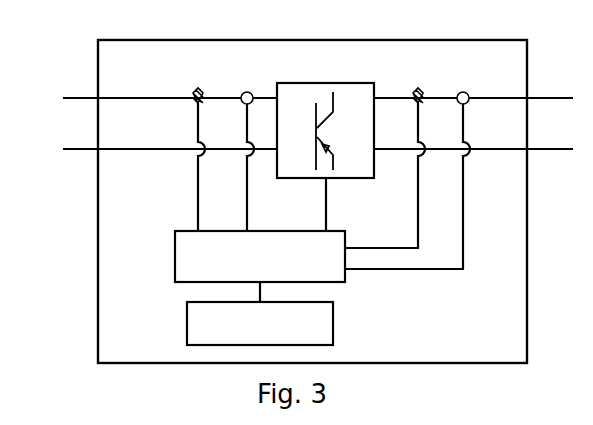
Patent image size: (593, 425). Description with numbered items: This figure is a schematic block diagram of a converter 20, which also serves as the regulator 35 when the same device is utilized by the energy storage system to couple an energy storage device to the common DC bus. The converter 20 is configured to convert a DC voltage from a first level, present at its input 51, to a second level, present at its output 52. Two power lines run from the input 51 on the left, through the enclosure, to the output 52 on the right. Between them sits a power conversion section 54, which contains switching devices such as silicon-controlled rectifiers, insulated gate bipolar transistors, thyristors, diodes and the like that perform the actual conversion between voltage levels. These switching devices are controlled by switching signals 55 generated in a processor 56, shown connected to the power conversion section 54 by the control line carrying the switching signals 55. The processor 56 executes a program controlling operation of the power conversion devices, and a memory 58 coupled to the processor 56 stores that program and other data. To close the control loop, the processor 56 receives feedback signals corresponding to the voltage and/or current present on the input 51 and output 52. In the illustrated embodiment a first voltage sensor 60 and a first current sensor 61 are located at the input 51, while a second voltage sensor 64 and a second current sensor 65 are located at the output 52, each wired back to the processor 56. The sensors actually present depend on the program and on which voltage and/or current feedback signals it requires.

The converter 20 is at (96, 322).
The regulator 35 is at (312, 201).
The input 51 is at (92, 90).
The output 52 is at (537, 90).
The power conversion section 54 is at (312, 83).
The switching signals 55 is at (326, 200).
The processor 56 is at (175, 272).
The memory 58 is at (187, 340).
The first voltage sensor 60 is at (198, 90).
The first current sensor 61 is at (246, 92).
The second voltage sensor 64 is at (418, 90).
The second current sensor 65 is at (463, 92).